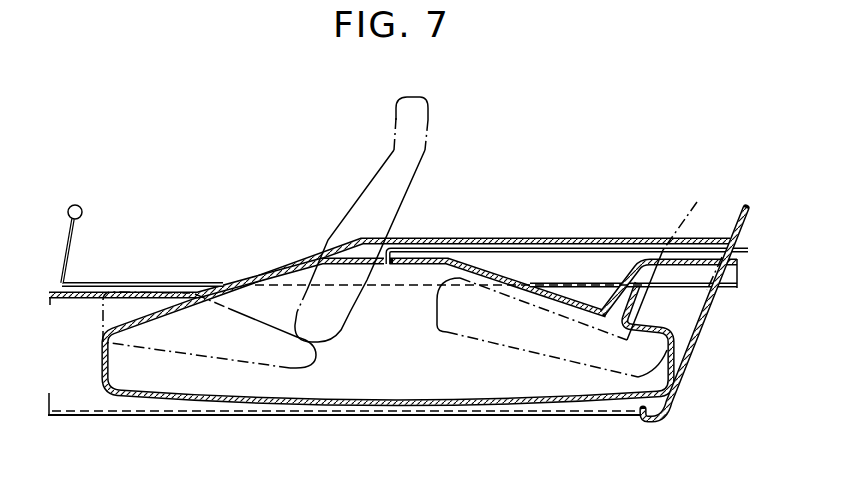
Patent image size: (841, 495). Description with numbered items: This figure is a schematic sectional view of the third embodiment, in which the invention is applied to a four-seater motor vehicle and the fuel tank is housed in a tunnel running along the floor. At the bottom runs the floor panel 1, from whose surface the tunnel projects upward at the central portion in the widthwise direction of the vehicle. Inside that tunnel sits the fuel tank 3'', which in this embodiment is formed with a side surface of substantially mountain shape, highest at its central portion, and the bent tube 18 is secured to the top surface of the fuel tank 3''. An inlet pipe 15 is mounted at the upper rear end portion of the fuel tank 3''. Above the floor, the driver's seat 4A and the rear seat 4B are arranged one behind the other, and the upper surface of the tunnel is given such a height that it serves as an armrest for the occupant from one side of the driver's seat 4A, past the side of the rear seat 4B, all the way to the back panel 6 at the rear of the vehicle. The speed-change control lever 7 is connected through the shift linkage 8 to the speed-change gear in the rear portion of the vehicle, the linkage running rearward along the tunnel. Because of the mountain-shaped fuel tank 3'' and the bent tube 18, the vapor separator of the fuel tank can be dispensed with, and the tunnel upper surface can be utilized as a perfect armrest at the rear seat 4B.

The floor panel 1 is at (427, 417).
The fuel tank 3'' is at (388, 366).
The driver's seat 4A is at (368, 182).
The rear seat 4B is at (675, 230).
The back panel 6 is at (697, 343).
The speed-change control lever 7 is at (83, 210).
The shift linkage 8 is at (149, 291).
The inlet pipe 15 is at (628, 282).
The bent tube 18 is at (462, 245).